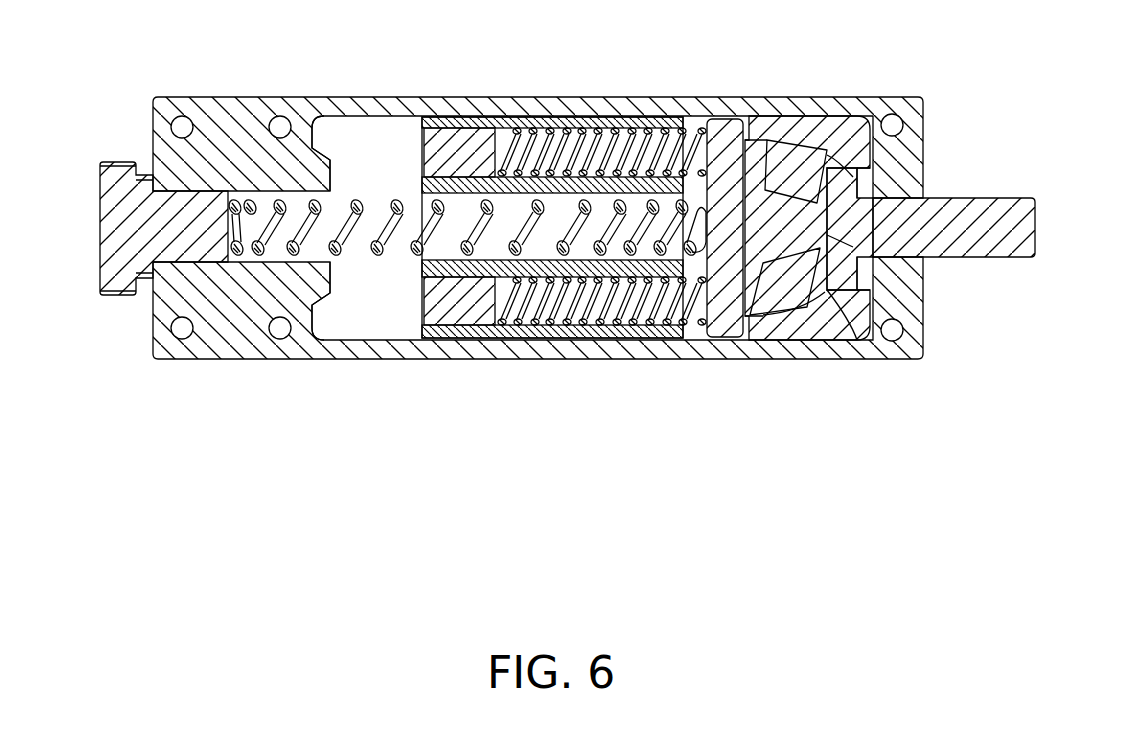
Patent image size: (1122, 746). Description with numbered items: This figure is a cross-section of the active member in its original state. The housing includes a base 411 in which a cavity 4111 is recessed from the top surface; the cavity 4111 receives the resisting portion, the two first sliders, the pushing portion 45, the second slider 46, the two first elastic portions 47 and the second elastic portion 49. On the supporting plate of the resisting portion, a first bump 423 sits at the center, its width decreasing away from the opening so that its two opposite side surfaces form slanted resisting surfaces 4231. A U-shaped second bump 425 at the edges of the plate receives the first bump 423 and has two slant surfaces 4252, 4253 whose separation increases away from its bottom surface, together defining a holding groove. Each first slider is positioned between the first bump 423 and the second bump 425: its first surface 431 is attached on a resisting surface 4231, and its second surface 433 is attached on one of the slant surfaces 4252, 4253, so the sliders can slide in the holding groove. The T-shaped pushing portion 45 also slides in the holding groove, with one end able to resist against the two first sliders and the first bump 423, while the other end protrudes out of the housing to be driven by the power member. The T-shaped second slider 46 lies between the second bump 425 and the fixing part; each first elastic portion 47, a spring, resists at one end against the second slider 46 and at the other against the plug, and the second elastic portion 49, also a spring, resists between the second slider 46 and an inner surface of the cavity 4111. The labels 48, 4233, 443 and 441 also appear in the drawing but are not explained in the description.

The base 411 is at (245, 325).
The cavity 4111 is at (357, 293).
The second elastic portion 49 is at (386, 265).
The carrier / second spring 48 is at (520, 320).
The first elastic portion 47 is at (520, 130).
The second slider 46 is at (708, 117).
The second bump 425 is at (840, 122).
The slant surface 4252 is at (870, 177).
The slant surface 4253 is at (872, 270).
The first bump 423 is at (692, 288).
The resisting surface 4231 is at (760, 120).
The lower clamping jaw 4233 is at (757, 317).
The second surface 433 is at (813, 120).
The lower arc surface 443 is at (777, 323).
The lower corner 441 is at (790, 318).
The first surface 431 is at (835, 230).
The pushing portion 45 is at (1013, 232).